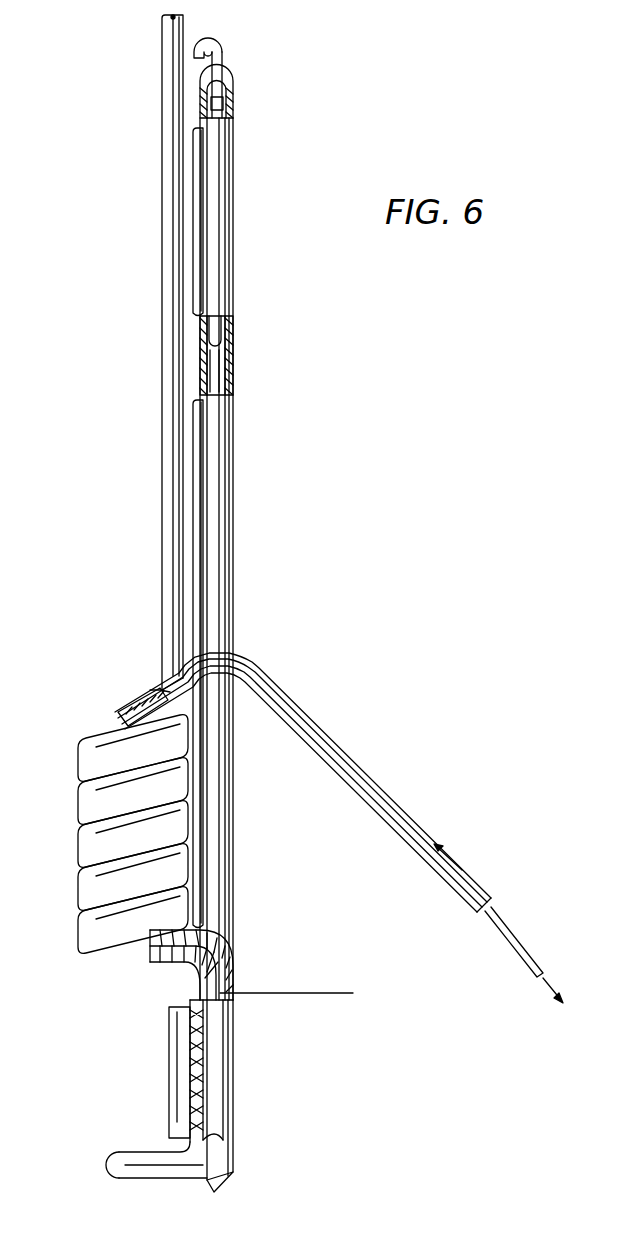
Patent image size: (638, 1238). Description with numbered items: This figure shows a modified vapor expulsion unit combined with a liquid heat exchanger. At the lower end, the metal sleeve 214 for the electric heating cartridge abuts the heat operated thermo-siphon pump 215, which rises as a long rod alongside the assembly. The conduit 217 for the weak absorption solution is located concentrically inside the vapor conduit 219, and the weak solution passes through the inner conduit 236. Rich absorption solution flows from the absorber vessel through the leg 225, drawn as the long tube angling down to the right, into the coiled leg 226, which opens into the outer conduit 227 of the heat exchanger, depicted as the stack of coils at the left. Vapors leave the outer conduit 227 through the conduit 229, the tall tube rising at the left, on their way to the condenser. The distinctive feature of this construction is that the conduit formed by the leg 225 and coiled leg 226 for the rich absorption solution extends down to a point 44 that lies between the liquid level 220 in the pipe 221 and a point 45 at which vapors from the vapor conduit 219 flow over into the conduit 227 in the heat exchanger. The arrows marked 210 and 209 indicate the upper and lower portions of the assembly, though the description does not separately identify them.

The conduit 229 is at (170, 204).
The conduit for the weak absorption solution 217 is at (232, 378).
The heat operated thermo-siphon pump 215 is at (205, 452).
The vapor conduit 219 is at (218, 541).
The actuator assembly 210 is at (283, 638).
The inner conduit 236 is at (152, 692).
The coiled leg 226 is at (115, 716).
The outer conduit 227 is at (80, 760).
The bellows assembly 209 is at (60, 868).
The leg 225 is at (357, 745).
The point 45 is at (222, 962).
The level 220 is at (322, 980).
The point 44 is at (198, 986).
The metal sleeve 214 is at (175, 1097).
The pipe 221 is at (223, 1070).